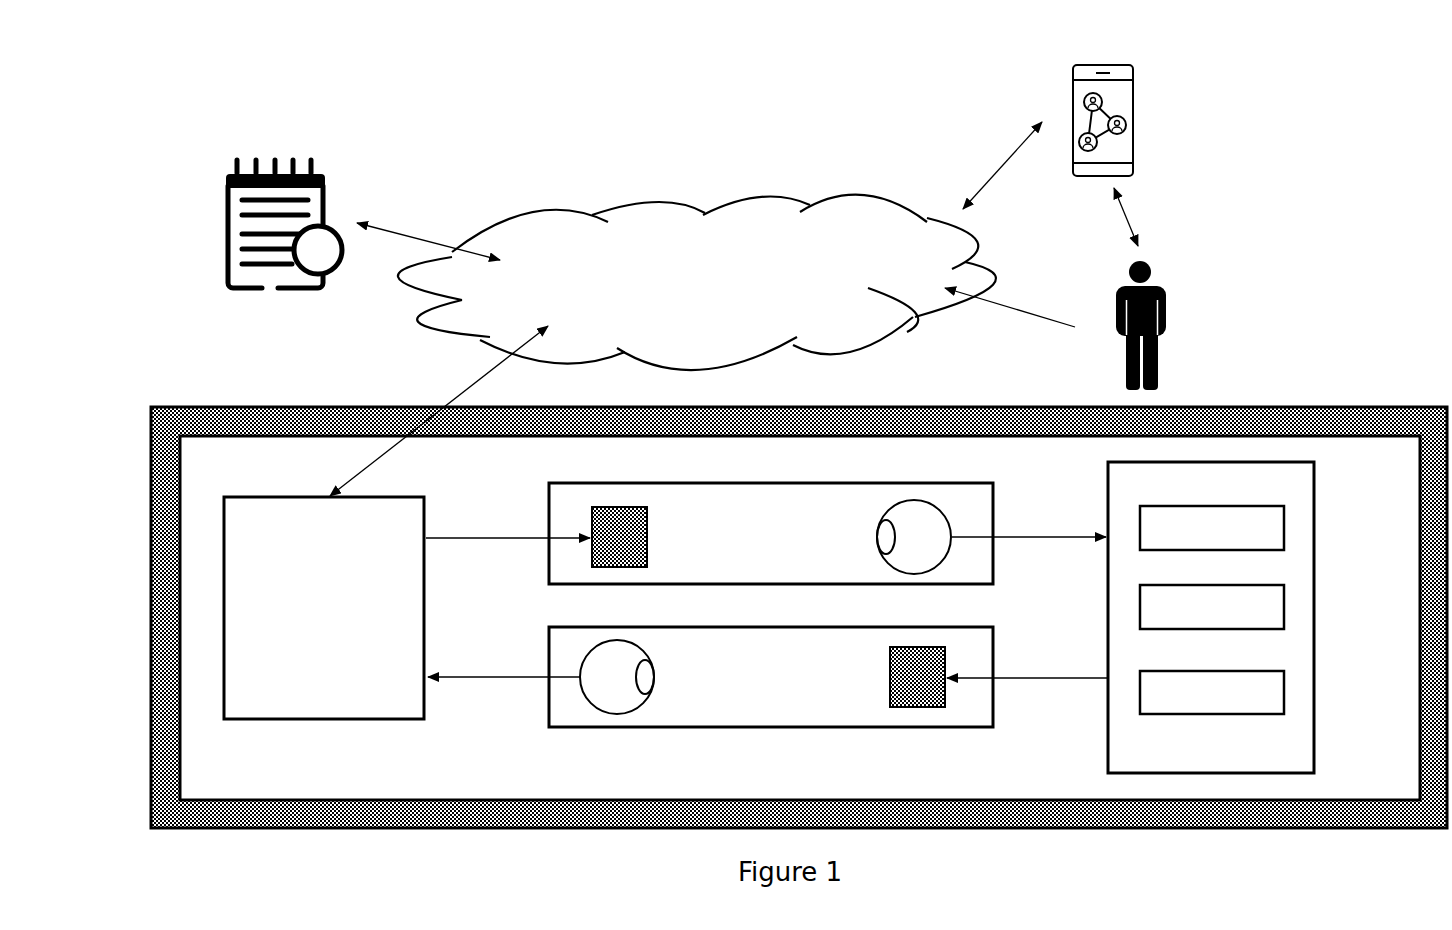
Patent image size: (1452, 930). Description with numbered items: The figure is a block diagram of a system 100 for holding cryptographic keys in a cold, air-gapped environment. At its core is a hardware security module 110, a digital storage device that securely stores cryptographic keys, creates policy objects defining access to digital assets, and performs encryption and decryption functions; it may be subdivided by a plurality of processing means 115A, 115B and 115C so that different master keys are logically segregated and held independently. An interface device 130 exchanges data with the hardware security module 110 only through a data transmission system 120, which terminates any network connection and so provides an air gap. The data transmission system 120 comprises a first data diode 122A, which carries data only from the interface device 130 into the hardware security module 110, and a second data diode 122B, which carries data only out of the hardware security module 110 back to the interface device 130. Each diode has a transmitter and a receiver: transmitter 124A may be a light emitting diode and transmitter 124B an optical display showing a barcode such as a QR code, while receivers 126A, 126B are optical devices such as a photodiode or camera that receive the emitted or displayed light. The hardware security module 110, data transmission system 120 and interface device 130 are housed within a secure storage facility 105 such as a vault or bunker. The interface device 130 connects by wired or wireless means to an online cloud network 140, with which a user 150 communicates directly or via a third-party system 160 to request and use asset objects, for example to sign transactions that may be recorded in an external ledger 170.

The system 100 is at (175, 330).
The secure storage facility 105 is at (1320, 407).
The hardware security module 110 is at (1237, 617).
The processing means 115A is at (1212, 528).
The processing means 115B is at (1212, 607).
The processing means 115C is at (1212, 692).
The data transmission system 120 is at (805, 620).
The first data diode 122A is at (973, 503).
The second data diode 122B is at (970, 661).
The transmitter 124A is at (623, 505).
The transmitter 124B is at (942, 707).
The receiver 126A is at (928, 562).
The receiver 126B is at (615, 700).
The interface device 130 is at (324, 633).
The cloud network 140 is at (697, 282).
The user 150 is at (1166, 325).
The third-party system 160 is at (1133, 120).
The external ledger 170 is at (284, 205).